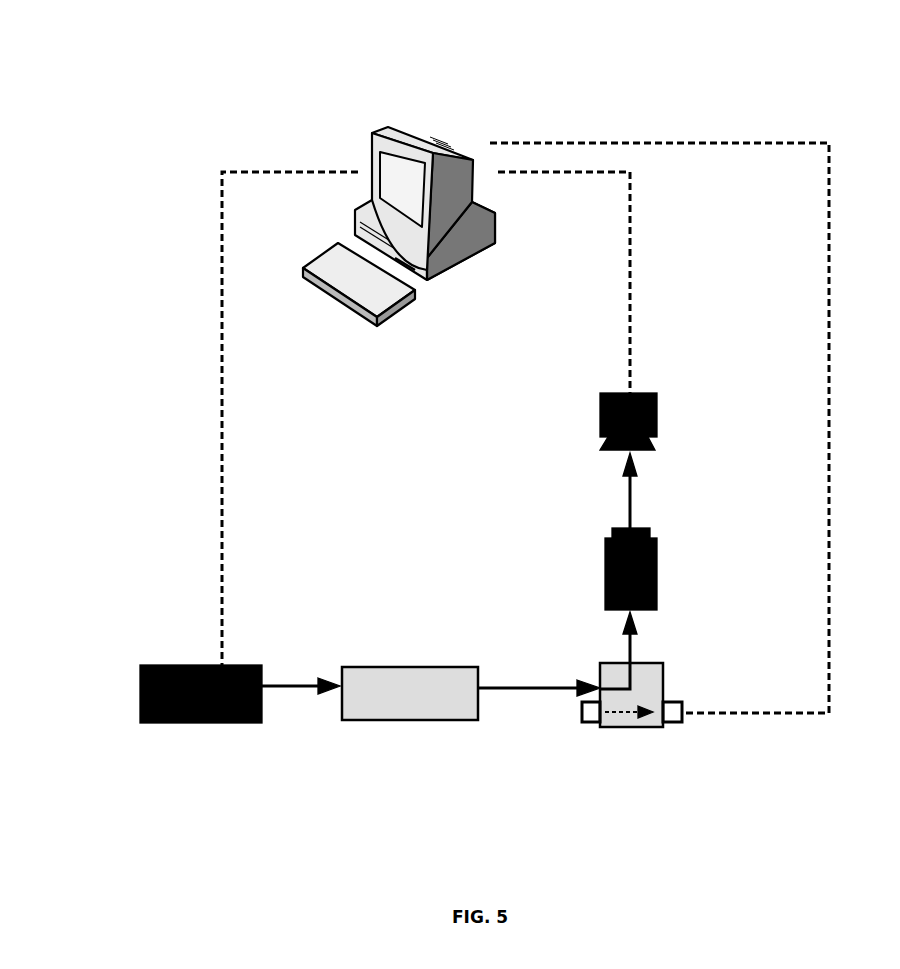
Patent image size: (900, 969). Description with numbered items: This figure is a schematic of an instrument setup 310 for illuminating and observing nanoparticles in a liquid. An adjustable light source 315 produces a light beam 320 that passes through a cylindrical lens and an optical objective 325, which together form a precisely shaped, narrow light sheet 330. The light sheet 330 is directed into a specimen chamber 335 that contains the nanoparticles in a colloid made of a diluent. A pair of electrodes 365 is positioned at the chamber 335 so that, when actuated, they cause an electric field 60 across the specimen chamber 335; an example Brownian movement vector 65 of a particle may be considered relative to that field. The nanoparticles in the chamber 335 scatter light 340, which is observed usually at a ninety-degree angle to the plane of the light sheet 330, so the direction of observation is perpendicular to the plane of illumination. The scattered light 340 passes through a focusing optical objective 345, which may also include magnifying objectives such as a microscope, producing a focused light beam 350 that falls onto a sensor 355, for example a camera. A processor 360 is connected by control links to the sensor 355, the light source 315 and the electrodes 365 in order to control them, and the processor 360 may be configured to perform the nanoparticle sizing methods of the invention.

The instrument setup 310 is at (142, 47).
The adjustable light source 315 is at (192, 723).
The light beam 320 is at (313, 688).
The optical objective 325 is at (420, 667).
The light sheet 330 is at (525, 690).
The specimen chamber 335 is at (600, 663).
The scattered light 340 is at (630, 687).
The focusing optical objective 345 is at (657, 568).
The focused light beam 350 is at (630, 503).
The sensor 355 is at (657, 393).
The processor 360 is at (448, 142).
The electrodes 365 is at (590, 723).
The electric field 60 is at (627, 710).
The example Brownian movement vector 65 is at (653, 682).